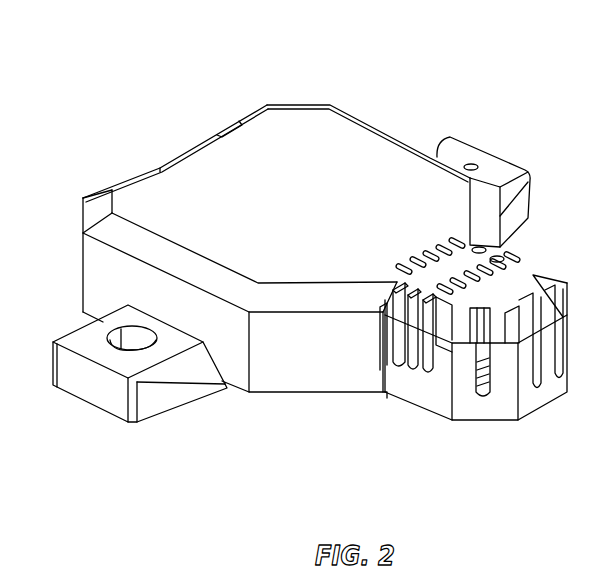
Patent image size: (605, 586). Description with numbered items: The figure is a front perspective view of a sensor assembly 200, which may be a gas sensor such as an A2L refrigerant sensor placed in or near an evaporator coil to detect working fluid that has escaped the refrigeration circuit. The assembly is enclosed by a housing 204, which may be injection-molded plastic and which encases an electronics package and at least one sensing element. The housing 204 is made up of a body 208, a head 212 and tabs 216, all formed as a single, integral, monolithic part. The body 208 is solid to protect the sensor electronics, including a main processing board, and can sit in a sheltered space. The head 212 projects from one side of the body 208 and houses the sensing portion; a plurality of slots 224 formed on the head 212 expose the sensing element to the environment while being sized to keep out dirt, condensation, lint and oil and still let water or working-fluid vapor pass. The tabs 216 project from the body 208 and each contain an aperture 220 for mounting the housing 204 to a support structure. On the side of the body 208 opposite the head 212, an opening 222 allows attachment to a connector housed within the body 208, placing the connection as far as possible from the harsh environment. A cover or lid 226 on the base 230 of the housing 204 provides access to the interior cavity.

The sensor assembly 200 is at (198, 57).
The housing 204 is at (205, 130).
The body 208 is at (373, 135).
The head 212 is at (537, 274).
The tabs 216 is at (492, 160).
The apertures 220 is at (107, 341).
The opening 222 is at (187, 158).
The slots 224 is at (424, 372).
The cover or lid 226 is at (273, 393).
The base 230 is at (343, 393).